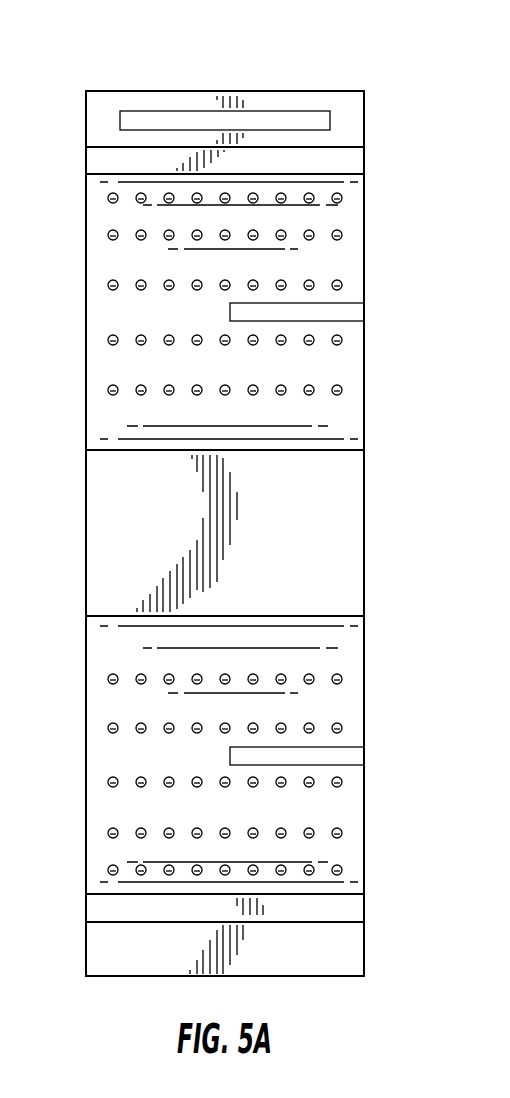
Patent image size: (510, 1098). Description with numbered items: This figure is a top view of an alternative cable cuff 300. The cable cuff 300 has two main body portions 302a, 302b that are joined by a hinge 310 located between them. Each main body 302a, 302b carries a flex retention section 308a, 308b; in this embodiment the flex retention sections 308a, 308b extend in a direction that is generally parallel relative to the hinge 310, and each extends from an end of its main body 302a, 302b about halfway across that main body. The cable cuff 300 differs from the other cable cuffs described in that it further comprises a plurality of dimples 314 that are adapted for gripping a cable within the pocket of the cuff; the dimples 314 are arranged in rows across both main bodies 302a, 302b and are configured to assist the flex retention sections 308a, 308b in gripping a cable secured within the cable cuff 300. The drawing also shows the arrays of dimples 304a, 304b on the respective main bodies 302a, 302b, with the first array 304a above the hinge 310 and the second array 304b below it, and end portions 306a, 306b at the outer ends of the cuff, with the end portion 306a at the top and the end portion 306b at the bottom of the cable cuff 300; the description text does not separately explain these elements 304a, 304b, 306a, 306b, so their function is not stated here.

The cable cuff 300 is at (125, 52).
The main body 302a is at (358, 208).
The main body 302b is at (353, 655).
The first array of apertures 304a is at (117, 367).
The second array of apertures 304b is at (118, 753).
The first end section with slot 306a is at (293, 115).
The second end section 306b is at (123, 960).
The flex retention section 308a is at (355, 312).
The flex retention section 308b is at (353, 758).
The hinge 310 is at (345, 552).
The dimples 314 is at (108, 286).